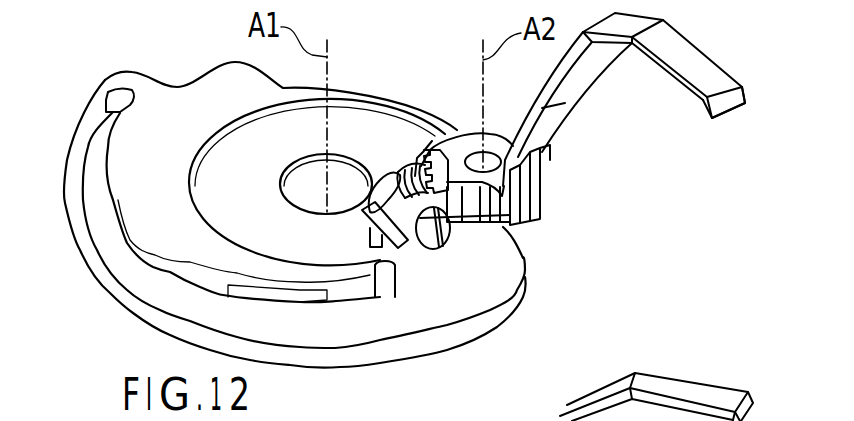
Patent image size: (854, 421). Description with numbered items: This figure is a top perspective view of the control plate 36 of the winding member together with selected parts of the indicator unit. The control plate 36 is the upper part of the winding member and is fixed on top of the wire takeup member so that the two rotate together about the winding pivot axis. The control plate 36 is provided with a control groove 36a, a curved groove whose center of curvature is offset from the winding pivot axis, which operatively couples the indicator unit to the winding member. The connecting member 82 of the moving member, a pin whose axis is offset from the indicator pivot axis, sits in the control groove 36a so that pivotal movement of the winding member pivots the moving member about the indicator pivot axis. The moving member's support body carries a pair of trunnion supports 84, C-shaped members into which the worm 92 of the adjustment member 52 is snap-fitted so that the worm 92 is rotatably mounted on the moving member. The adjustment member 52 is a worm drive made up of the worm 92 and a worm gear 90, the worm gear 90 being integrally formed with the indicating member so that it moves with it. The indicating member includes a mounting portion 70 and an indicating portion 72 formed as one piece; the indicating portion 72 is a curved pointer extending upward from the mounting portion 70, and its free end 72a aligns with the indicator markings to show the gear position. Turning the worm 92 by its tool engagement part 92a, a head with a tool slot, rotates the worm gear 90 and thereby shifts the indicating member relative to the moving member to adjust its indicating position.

The control plate 36 is at (525, 267).
The control groove 36a is at (112, 93).
The adjustment member 52 is at (470, 70).
The mounting portion 70 is at (483, 183).
The indicating portion 72 is at (587, 67).
The free end 72a is at (726, 117).
The connecting member 82 is at (383, 270).
The trunnion supports 84 is at (385, 173).
The worm gear 90 is at (420, 160).
The worm 92 is at (398, 180).
The tool engagement part 92a is at (442, 235).